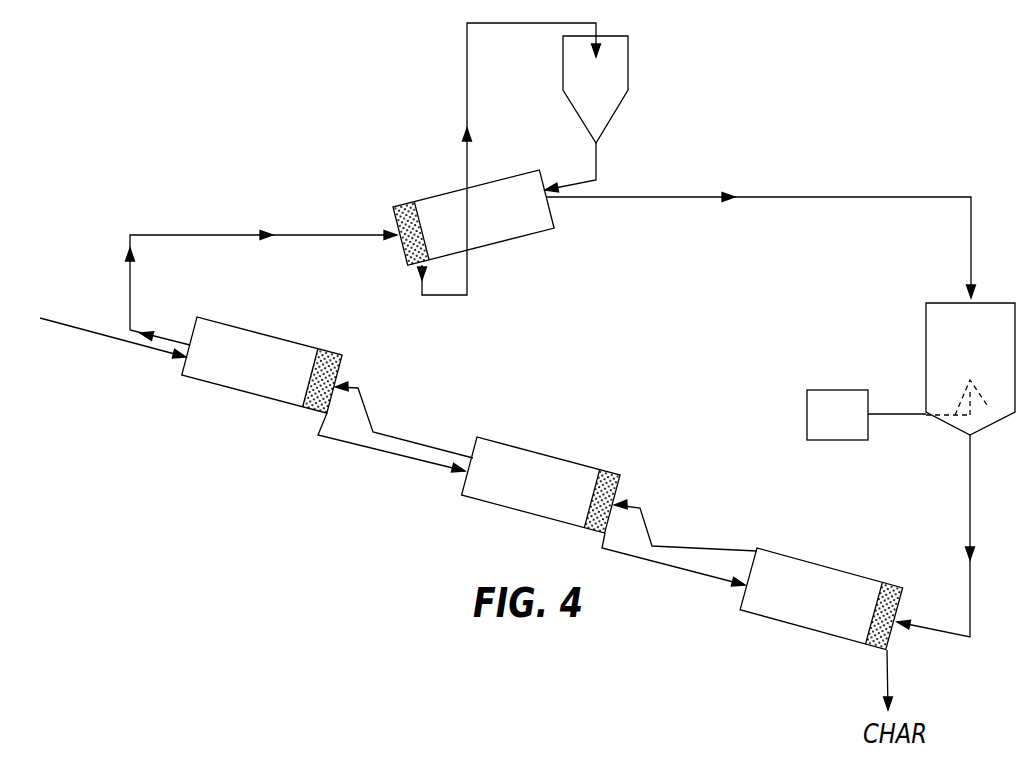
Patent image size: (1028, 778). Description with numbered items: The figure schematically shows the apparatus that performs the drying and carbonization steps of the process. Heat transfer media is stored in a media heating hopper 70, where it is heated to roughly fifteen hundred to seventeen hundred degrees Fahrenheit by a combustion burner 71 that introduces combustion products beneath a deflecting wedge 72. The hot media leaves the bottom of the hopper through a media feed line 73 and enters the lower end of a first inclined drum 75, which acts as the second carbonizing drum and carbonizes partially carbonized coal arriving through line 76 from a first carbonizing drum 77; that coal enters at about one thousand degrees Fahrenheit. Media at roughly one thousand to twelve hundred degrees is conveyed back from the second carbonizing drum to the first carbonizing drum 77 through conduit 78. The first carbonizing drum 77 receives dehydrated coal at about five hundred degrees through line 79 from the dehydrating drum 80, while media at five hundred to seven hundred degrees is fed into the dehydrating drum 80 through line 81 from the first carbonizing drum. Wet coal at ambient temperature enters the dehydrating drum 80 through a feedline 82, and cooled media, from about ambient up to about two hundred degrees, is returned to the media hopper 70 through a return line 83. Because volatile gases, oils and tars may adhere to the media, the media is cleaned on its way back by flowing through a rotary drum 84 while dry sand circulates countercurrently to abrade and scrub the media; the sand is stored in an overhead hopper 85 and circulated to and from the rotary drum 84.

The media heating hopper 70 is at (955, 340).
The combustion burner 71 is at (826, 428).
The deflecting wedge 72 is at (956, 386).
The feed conduit to first kiln 73 is at (970, 466).
The first inclined drum 75 is at (796, 618).
The line 76 is at (658, 570).
The first carbonizing drum 77 is at (510, 498).
The conduit 78 is at (708, 540).
The line 79 is at (384, 456).
The dehydrating drum 80 is at (241, 378).
The line 81 is at (438, 429).
The feedline 82 is at (80, 330).
The return line 83 is at (200, 238).
The rotary drum 84 is at (490, 228).
The overhead hopper 85 is at (584, 91).